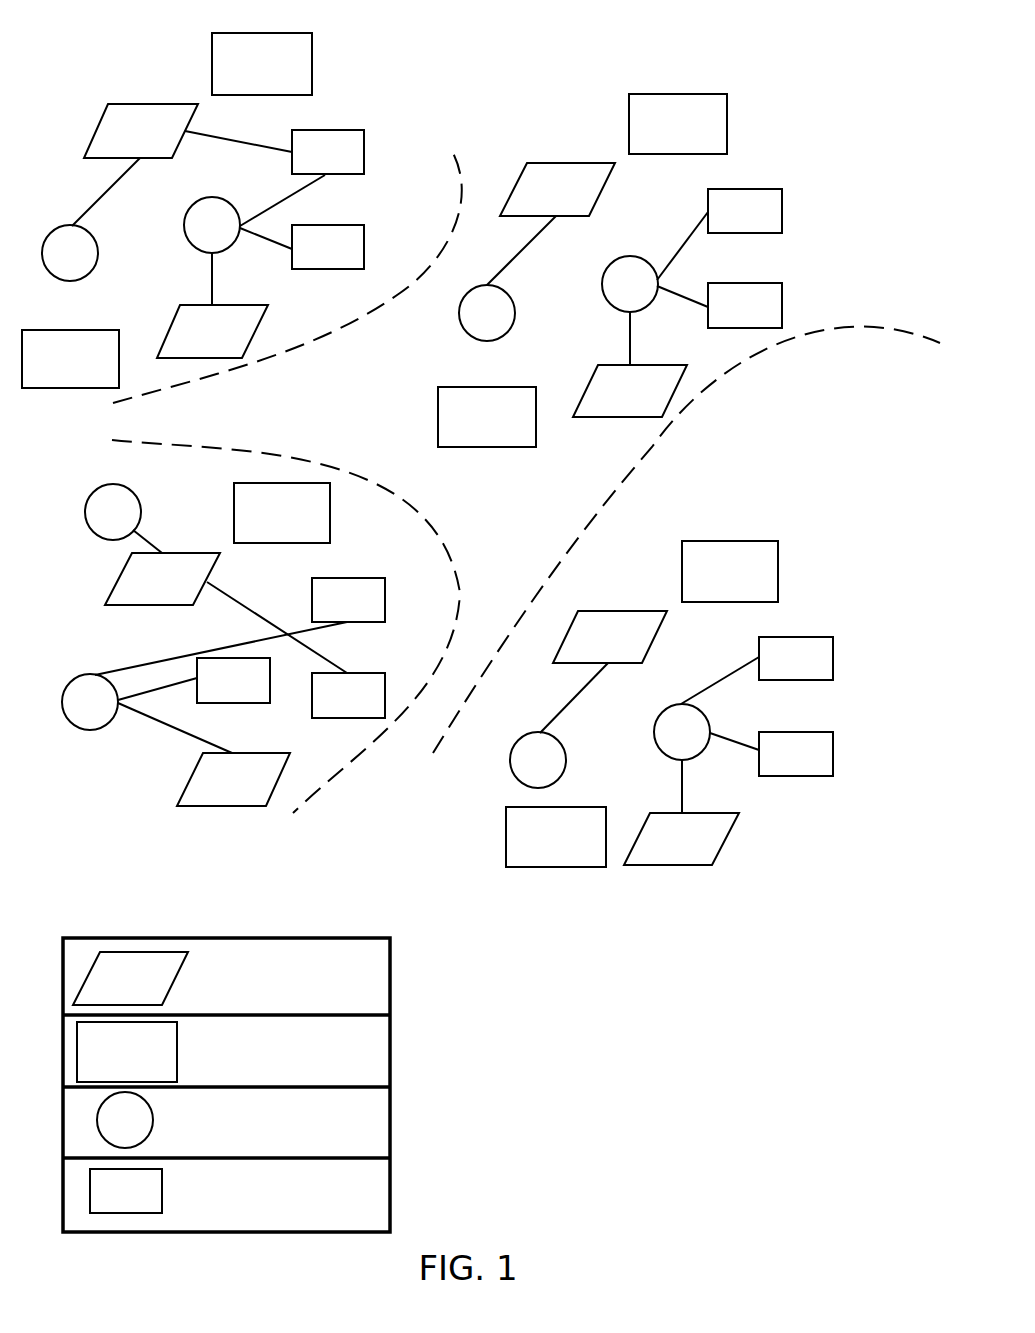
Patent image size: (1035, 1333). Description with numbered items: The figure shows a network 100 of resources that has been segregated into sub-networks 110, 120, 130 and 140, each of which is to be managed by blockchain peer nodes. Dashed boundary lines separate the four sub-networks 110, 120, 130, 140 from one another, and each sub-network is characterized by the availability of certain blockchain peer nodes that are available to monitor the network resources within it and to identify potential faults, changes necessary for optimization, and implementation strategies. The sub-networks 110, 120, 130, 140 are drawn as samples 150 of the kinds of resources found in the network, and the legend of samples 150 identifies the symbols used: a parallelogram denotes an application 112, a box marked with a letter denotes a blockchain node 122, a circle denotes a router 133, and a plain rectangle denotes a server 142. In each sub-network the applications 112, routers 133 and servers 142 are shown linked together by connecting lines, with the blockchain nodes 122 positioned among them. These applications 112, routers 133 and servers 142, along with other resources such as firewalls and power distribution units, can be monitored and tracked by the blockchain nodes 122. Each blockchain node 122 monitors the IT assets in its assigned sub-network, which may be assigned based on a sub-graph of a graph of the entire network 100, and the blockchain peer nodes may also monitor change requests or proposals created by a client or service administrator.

The network 100 is at (79, 21).
The sub-network 110 is at (619, 270).
The sub-network 120 is at (193, 210).
The sub-network 130 is at (223, 644).
The sub-network 140 is at (678, 695).
The samples 150 is at (226, 1066).
The application 112 is at (205, 979).
The blockchain node 122 is at (207, 1052).
The router 133 is at (209, 1120).
The server 142 is at (205, 1191).